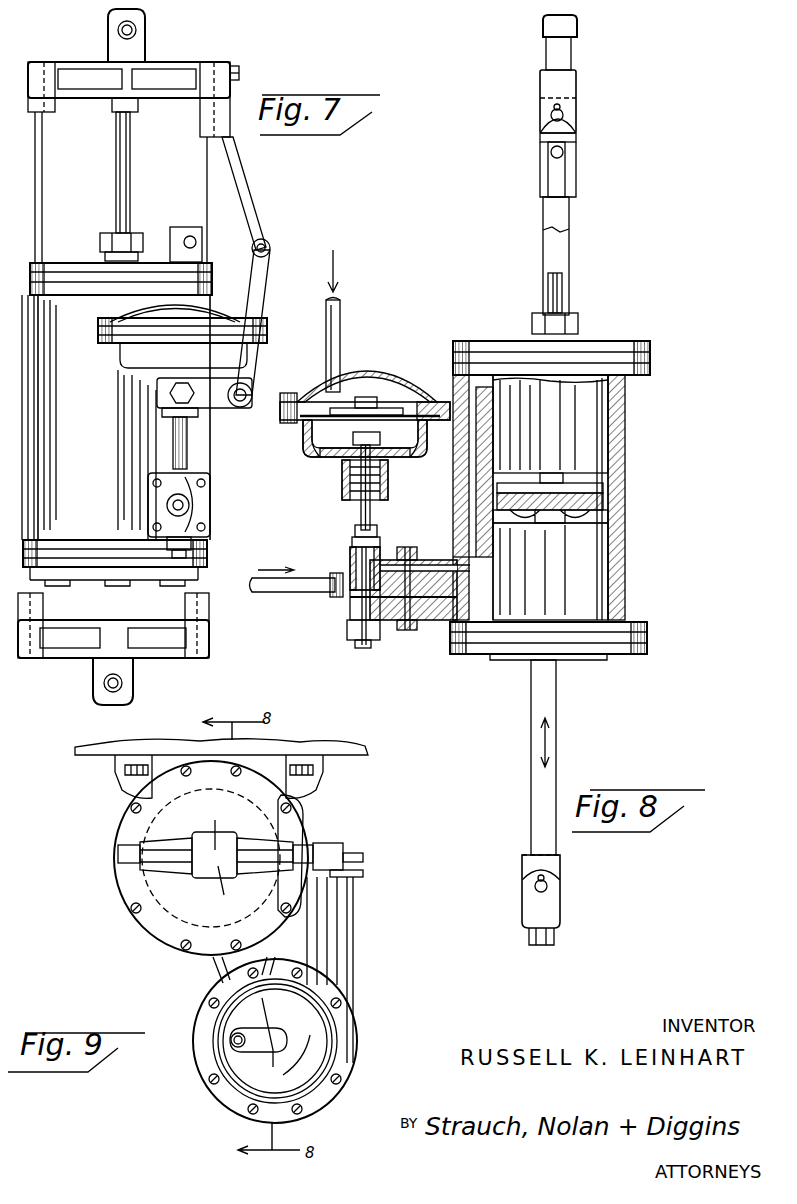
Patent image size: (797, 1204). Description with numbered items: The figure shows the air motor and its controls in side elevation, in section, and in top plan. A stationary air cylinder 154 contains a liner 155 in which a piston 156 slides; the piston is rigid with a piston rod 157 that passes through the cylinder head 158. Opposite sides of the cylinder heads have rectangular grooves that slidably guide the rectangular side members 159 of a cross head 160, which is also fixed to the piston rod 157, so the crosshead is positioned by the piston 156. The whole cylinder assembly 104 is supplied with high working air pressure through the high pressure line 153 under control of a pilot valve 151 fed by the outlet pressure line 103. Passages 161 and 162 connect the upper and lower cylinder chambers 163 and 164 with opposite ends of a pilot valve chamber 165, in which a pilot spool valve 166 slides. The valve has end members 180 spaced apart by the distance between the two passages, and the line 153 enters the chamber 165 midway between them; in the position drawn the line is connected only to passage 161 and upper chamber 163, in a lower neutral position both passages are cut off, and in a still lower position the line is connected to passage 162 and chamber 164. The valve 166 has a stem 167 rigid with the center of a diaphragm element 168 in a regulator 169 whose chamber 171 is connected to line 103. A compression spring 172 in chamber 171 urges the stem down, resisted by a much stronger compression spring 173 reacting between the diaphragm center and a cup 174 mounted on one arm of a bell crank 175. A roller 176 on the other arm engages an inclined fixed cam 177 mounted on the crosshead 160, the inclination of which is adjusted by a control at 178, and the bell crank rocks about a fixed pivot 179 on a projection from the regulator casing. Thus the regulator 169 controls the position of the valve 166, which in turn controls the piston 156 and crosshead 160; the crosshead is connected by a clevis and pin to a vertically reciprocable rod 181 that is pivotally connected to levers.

In FIG. 8, the outlet pressure line 103 is at (342, 310).
In FIG. 9, the outlet pressure line 103 is at (250, 1031).
In FIG. 8, the cylinder assembly 104 is at (644, 478).
In FIG. 7, the pilot valve 151 is at (218, 503).
In FIG. 8, the pilot valve 151 is at (342, 610).
In FIG. 8, the high pressure line 153 is at (302, 606).
In FIG. 7, the stationary air cylinder 154 is at (105, 451).
In FIG. 8, the stationary air cylinder 154 is at (625, 515).
In FIG. 9, the stationary air cylinder 154 is at (150, 928).
In FIG. 8, the liner 155 is at (617, 428).
In FIG. 8, the piston 156 is at (530, 514).
In FIG. 7, the piston rod 157 is at (131, 128).
In FIG. 8, the piston rod 157 is at (563, 283).
In FIG. 8, the cylinder head 158 is at (612, 348).
In FIG. 7, the rectangular side members 159 is at (40, 195).
In FIG. 8, the rectangular side members 159 is at (568, 240).
In FIG. 9, the rectangular side members 159 is at (118, 855).
In FIG. 7, the crosshead 160 is at (174, 64).
In FIG. 8, the crosshead 160 is at (590, 127).
In FIG. 9, the crosshead 160 is at (165, 858).
In FIG. 8, the passage 161 is at (430, 572).
In FIG. 8, the passage 162 is at (428, 618).
In FIG. 8, the upper cylinder chamber 163 is at (605, 392).
In FIG. 8, the lower cylinder chamber 164 is at (598, 562).
In FIG. 8, the pilot valve chamber 165 is at (352, 618).
In FIG. 8, the pilot spool valve 166 is at (350, 572).
In FIG. 8, the stem 167 is at (362, 512).
In FIG. 8, the diaphragm element 168 is at (405, 400).
In FIG. 7, the regulator 169 is at (120, 308).
In FIG. 8, the regulator 169 is at (320, 400).
In FIG. 9, the regulator 169 is at (352, 1027).
In FIG. 8, the chamber 171 is at (412, 383).
In FIG. 8, the compression spring 172 is at (366, 395).
In FIG. 8, the compression spring 173 is at (345, 458).
In FIG. 7, the cup 174 is at (160, 386).
In FIG. 8, the cup 174 is at (342, 486).
In FIG. 7, the bell crank 175 is at (265, 270).
In FIG. 9, the bell crank 175 is at (352, 920).
In FIG. 7, the roller 176 is at (266, 244).
In FIG. 7, the inclined fixed cam 177 is at (240, 176).
In FIG. 9, the inclined fixed cam 177 is at (337, 853).
In FIG. 7, the control 178 is at (239, 72).
In FIG. 8, the control 178 is at (563, 152).
In FIG. 7, the fixed pivot 179 is at (240, 408).
In FIG. 8, the end members 180 is at (378, 560).
In FIG. 8, the vertically reciprocable rod 181 is at (572, 43).